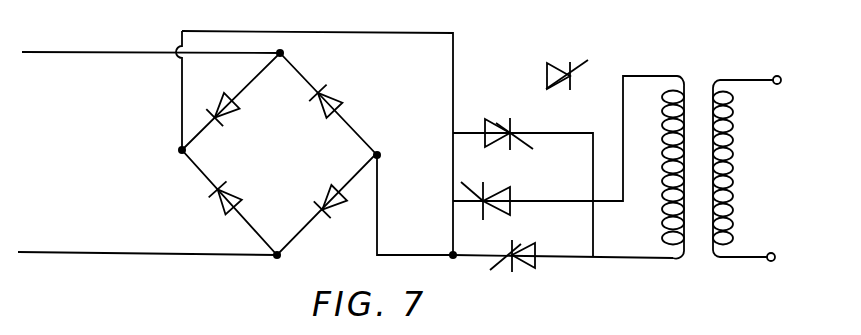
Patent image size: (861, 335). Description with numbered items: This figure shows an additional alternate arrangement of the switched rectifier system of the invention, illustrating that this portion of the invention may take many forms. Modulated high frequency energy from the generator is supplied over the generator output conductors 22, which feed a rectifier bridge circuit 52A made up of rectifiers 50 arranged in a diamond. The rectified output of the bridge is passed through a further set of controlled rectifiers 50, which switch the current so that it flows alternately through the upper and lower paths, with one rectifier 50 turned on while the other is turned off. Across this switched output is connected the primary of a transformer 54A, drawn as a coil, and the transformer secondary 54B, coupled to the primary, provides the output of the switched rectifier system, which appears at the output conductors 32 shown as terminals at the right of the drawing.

The generator output conductors 22 is at (98, 51).
The controlled rectifiers 50 is at (320, 112).
The rectifier bridge circuit 52A is at (355, 114).
The transformer primary 54A is at (662, 223).
The transformer secondary 54B is at (725, 207).
The output conductors 32 is at (767, 77).